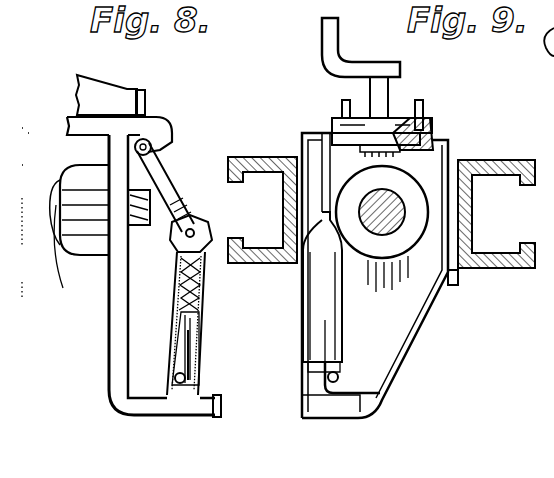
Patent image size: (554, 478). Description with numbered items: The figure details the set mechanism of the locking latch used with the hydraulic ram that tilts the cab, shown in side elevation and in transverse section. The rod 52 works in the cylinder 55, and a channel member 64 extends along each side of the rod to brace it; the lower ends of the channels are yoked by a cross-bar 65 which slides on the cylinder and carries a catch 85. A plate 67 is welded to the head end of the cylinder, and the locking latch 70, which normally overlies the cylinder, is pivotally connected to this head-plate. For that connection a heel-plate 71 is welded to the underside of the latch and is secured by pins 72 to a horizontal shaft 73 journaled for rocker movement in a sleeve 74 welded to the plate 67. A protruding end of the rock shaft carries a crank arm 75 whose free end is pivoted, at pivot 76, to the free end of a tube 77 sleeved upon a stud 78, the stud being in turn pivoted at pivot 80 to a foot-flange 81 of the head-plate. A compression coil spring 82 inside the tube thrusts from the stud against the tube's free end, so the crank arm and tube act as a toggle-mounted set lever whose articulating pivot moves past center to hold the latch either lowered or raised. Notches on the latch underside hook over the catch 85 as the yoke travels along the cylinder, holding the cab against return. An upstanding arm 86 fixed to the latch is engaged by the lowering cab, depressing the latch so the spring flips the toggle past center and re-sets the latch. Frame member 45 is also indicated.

In FIG. 9, the frame member 45 is at (542, 54).
In FIG. 8, the rod 52 is at (65, 242).
In FIG. 9, the rod 52 is at (406, 236).
In FIG. 8, the cylinder 55 is at (95, 248).
In FIG. 9, the channel member 64 is at (381, 212).
In FIG. 9, the cross-bar 65 is at (460, 284).
In FIG. 8, the plate 67 is at (112, 339).
In FIG. 9, the plate 67 is at (450, 312).
In FIG. 8, the locking latch 70 is at (100, 86).
In FIG. 9, the locking latch 70 is at (395, 110).
In FIG. 8, the heel-plate 71 is at (90, 128).
In FIG. 9, the heel-plate 71 is at (333, 127).
In FIG. 8, the pins 72 is at (146, 103).
In FIG. 9, the pins 72 is at (341, 101).
In FIG. 8, the horizontal shaft 73 is at (153, 148).
In FIG. 9, the horizontal shaft 73 is at (435, 140).
In FIG. 9, the sleeve 74 is at (398, 157).
In FIG. 8, the crank arm 75 is at (173, 177).
In FIG. 9, the crank arm 75 is at (322, 167).
In FIG. 8, the pivot 76 is at (192, 231).
In FIG. 9, the pivot 76 is at (343, 225).
In FIG. 8, the tube 77 is at (173, 327).
In FIG. 9, the tube 77 is at (316, 321).
In FIG. 8, the stud 78 is at (193, 344).
In FIG. 9, the stud 78 is at (308, 368).
In FIG. 8, the pivot 80 is at (176, 378).
In FIG. 9, the pivot 80 is at (338, 375).
In FIG. 8, the foot-flange 81 is at (220, 405).
In FIG. 9, the foot-flange 81 is at (303, 403).
In FIG. 8, the compression coil spring 82 is at (201, 292).
In FIG. 9, the catch 85 is at (418, 108).
In FIG. 9, the upstanding arm 86 is at (339, 31).